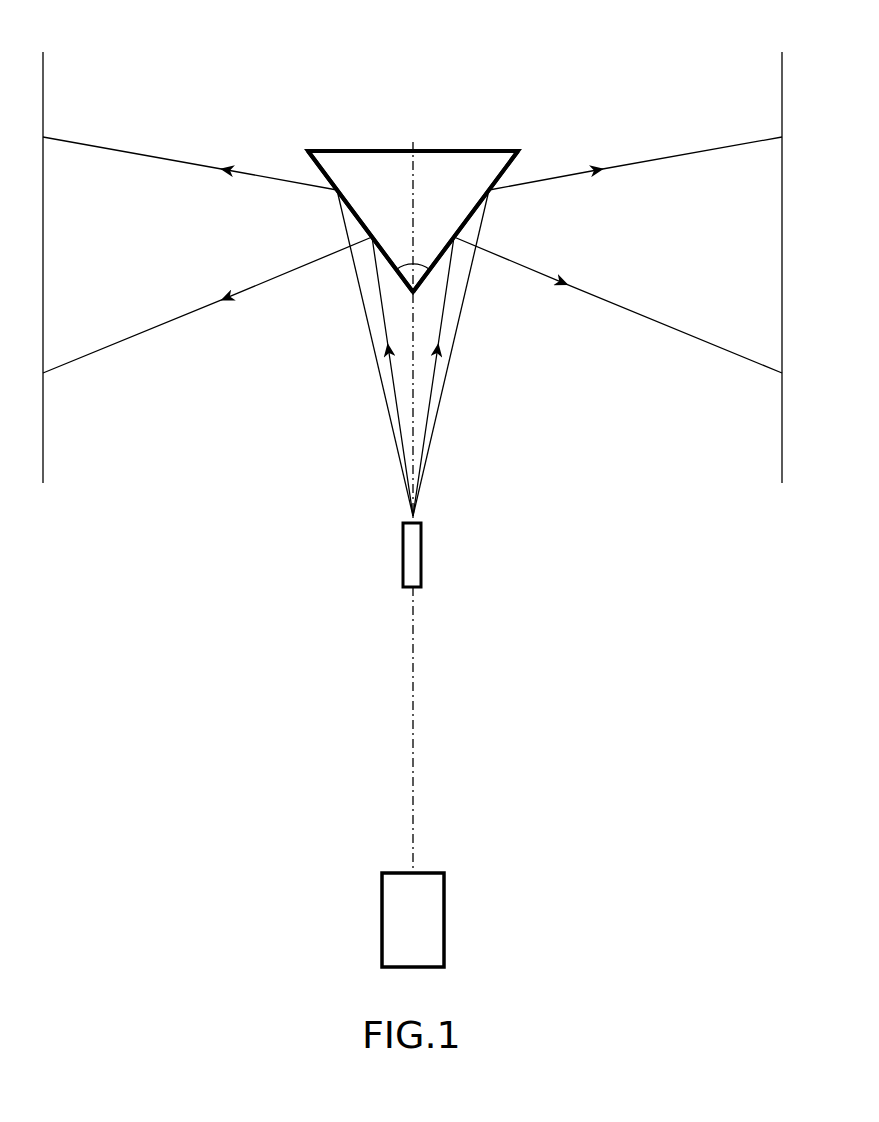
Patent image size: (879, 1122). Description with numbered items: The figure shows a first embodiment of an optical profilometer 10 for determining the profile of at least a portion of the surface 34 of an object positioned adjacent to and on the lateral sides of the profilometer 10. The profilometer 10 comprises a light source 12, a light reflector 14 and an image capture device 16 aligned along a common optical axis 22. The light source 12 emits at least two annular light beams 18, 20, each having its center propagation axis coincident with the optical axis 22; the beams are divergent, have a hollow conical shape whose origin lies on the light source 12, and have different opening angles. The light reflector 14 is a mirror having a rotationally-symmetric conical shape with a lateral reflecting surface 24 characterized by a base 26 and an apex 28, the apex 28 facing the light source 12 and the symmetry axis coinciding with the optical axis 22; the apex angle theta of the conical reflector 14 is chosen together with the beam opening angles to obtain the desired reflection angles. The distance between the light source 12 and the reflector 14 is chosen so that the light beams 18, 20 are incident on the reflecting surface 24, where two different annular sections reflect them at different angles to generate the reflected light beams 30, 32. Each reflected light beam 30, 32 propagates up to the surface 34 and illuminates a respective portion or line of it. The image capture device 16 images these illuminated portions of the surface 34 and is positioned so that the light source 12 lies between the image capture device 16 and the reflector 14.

The optical profilometer 10 is at (694, 664).
The light source 12 is at (413, 552).
The light reflector 14 is at (442, 167).
The image capture device 16 is at (435, 913).
The annular light beam 18 is at (384, 322).
The annular light beam 20 is at (389, 415).
The optical axis 22 is at (413, 738).
The lateral reflecting surface 24 is at (513, 169).
The base 26 is at (344, 147).
The apex 28 is at (424, 300).
The reflected light beam 30 is at (173, 320).
The reflected light beam 32 is at (167, 160).
The surface 34 is at (43, 100).